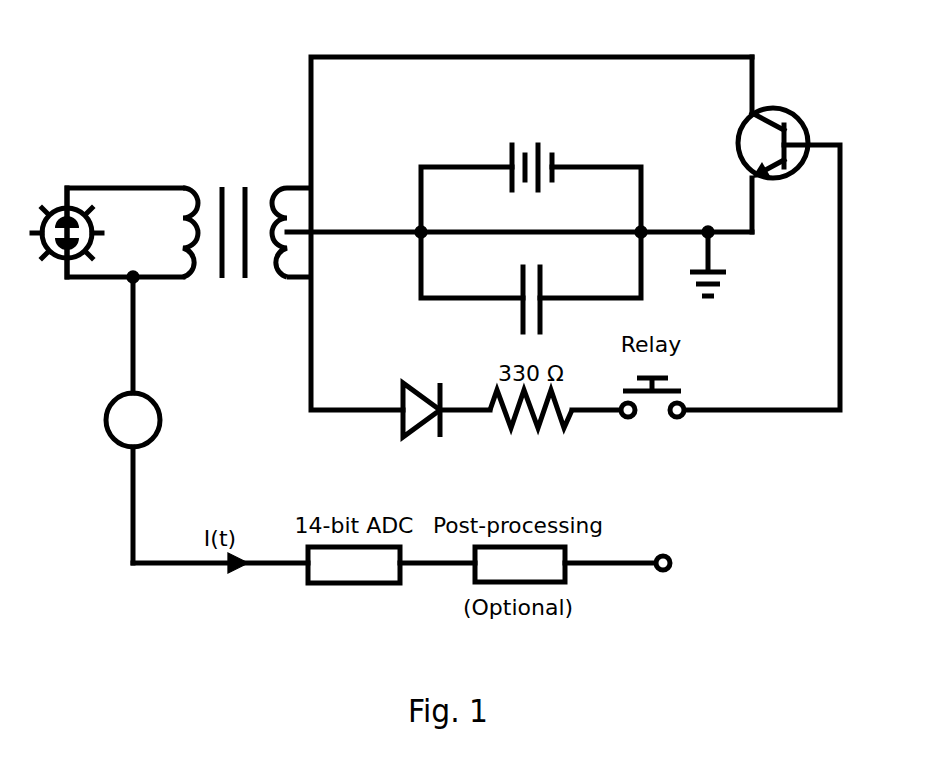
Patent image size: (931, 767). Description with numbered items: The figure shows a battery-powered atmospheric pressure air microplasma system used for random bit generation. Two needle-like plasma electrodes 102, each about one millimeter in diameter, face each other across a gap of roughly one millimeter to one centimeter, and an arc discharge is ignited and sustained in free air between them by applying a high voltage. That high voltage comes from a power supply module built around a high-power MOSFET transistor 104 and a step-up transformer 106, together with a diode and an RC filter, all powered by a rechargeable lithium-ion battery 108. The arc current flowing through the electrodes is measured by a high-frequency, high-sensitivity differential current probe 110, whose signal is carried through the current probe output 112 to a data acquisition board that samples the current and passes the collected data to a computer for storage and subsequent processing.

The plasma electrodes 102 is at (103, 209).
The MOSFET transistor 104 is at (806, 138).
The step-up transformer 106 is at (245, 182).
The rechargeable lithium-ion battery 108 is at (531, 209).
The current probe 110 is at (102, 389).
The current probe output 112 is at (753, 530).